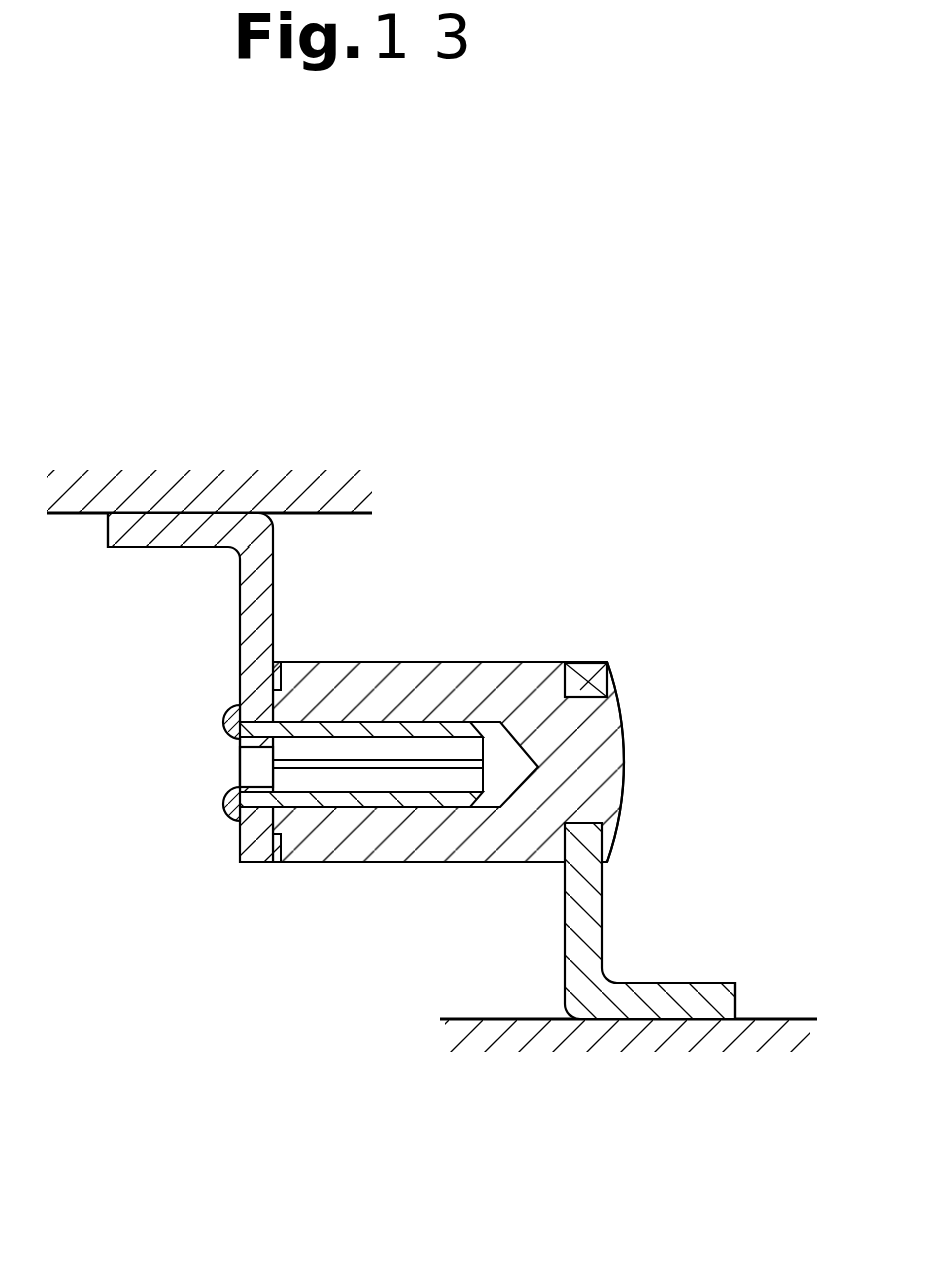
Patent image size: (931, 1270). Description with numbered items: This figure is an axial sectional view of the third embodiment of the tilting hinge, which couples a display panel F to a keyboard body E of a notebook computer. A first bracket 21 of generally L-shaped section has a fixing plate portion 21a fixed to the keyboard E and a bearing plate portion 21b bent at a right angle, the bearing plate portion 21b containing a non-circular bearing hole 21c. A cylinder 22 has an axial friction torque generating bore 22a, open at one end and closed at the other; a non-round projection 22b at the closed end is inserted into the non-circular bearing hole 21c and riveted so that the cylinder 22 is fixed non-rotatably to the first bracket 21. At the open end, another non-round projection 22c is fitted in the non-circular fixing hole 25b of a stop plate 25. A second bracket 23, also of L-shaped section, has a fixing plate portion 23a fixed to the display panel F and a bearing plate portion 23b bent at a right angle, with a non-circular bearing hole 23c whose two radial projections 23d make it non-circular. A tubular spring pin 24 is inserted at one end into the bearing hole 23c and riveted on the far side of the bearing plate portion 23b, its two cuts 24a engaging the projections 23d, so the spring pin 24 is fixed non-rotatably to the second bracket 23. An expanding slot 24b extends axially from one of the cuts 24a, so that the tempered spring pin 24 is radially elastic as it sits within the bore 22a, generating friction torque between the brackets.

The display panel F is at (366, 515).
The keyboard E is at (781, 1003).
The first bracket 21 is at (610, 908).
The fixing plate portion 21a is at (708, 990).
The bearing plate portion 21b is at (593, 663).
The non-circular bearing hole 21c is at (600, 687).
The cylinder 22 is at (490, 662).
The friction torque generating bore 22a is at (495, 808).
The projection 22b is at (593, 762).
The projection 22c is at (236, 704).
The second bracket 23 is at (236, 572).
The fixing plate portion 23a is at (118, 533).
The bearing plate portion 23b is at (251, 858).
The non-circular bearing hole 23c is at (238, 744).
The projections 23d is at (236, 778).
The tubular spring pin 24 is at (345, 800).
The cuts 24a is at (236, 842).
The expanding slot 24b is at (405, 768).
The stop plate 25 is at (277, 858).
The non-circular fixing hole 25b is at (287, 695).